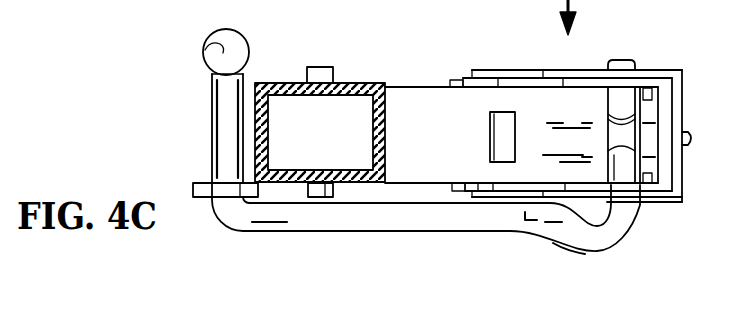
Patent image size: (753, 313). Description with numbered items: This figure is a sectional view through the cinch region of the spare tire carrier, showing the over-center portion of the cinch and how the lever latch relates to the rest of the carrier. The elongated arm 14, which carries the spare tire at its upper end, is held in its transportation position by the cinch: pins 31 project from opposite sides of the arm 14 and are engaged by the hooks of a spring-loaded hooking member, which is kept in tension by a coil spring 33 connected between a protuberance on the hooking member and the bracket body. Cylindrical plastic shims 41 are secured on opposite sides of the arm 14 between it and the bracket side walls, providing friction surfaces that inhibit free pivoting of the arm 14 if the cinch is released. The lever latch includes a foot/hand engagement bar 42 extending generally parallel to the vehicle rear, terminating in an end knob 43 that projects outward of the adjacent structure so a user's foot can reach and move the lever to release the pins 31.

The elongated arm 14 is at (407, 93).
The pins 31 is at (313, 68).
The coil spring 33 is at (689, 134).
The cylindrical plastic shims 41 is at (462, 81).
The foot/hand engagement bar 42 is at (212, 130).
The end knob 43 is at (207, 48).